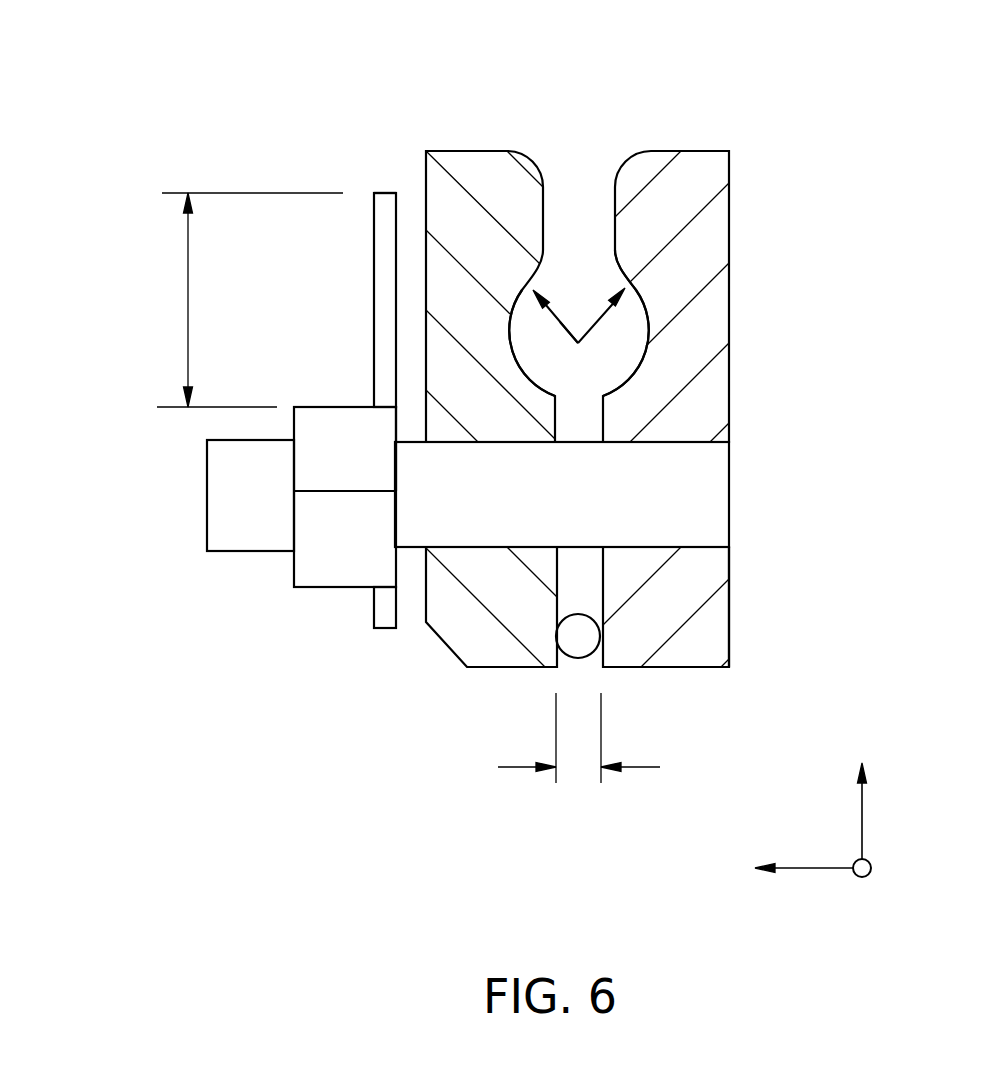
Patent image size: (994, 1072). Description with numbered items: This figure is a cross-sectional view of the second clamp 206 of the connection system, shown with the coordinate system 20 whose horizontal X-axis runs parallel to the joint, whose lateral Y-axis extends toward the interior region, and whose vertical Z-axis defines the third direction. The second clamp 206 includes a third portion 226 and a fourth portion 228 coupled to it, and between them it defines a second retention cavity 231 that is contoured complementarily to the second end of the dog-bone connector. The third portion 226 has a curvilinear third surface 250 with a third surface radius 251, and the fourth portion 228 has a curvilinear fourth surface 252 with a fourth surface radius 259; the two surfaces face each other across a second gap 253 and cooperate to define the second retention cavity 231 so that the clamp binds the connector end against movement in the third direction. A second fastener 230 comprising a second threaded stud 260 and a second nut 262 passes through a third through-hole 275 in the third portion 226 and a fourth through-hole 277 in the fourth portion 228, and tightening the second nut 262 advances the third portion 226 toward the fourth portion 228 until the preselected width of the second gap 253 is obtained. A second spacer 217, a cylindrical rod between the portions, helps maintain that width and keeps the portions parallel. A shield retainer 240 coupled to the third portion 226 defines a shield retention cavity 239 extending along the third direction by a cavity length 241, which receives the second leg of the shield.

The second clamp 206 is at (115, 130).
The shield retention cavity 239 is at (385, 165).
The shield retainer 240 is at (373, 212).
The cavity length 241 is at (188, 297).
The third surface 250 is at (513, 327).
The second retention cavity 231 is at (582, 200).
The fourth surface 252 is at (632, 282).
The fourth surface radius 259 is at (597, 330).
The third surface radius 251 is at (566, 343).
The second threaded stud 260 is at (218, 458).
The second nut 262 is at (305, 465).
The second fastener 230 is at (230, 518).
The third through-hole 275 is at (400, 579).
The third portion 226 is at (452, 637).
The second spacer 217 is at (575, 645).
The second gap 253 is at (578, 767).
The fourth through-hole 277 is at (726, 568).
The fourth portion 228 is at (695, 625).
The coordinate system 20 is at (808, 823).